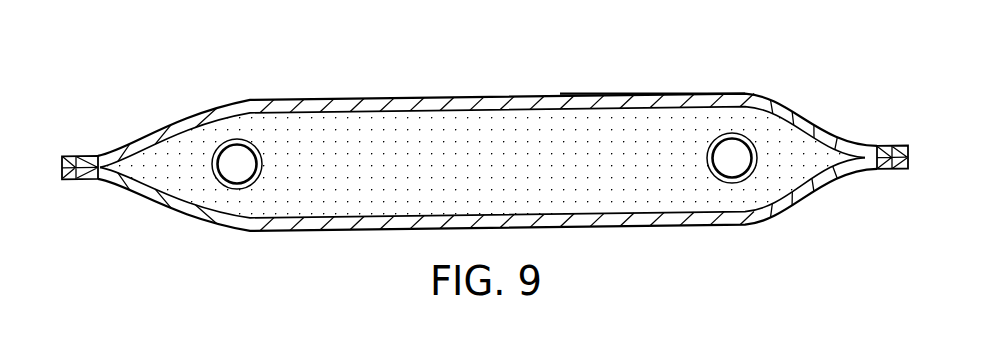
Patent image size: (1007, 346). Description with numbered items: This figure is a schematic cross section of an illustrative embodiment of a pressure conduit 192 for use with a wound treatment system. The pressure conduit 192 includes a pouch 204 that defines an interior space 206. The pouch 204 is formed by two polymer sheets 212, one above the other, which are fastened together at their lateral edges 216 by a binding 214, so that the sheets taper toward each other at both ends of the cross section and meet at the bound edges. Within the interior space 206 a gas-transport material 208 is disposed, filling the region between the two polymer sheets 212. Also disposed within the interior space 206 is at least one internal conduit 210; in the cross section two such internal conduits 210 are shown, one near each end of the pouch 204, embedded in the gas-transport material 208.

The pressure conduit 192 is at (560, 95).
The pouch 204 is at (672, 93).
The interior space 206 is at (358, 128).
The gas-transport material 208 is at (505, 173).
The internal conduit 210 is at (262, 169).
The polymer sheets 212 is at (790, 112).
The binding 214 is at (83, 179).
The lateral edges 216 is at (122, 152).